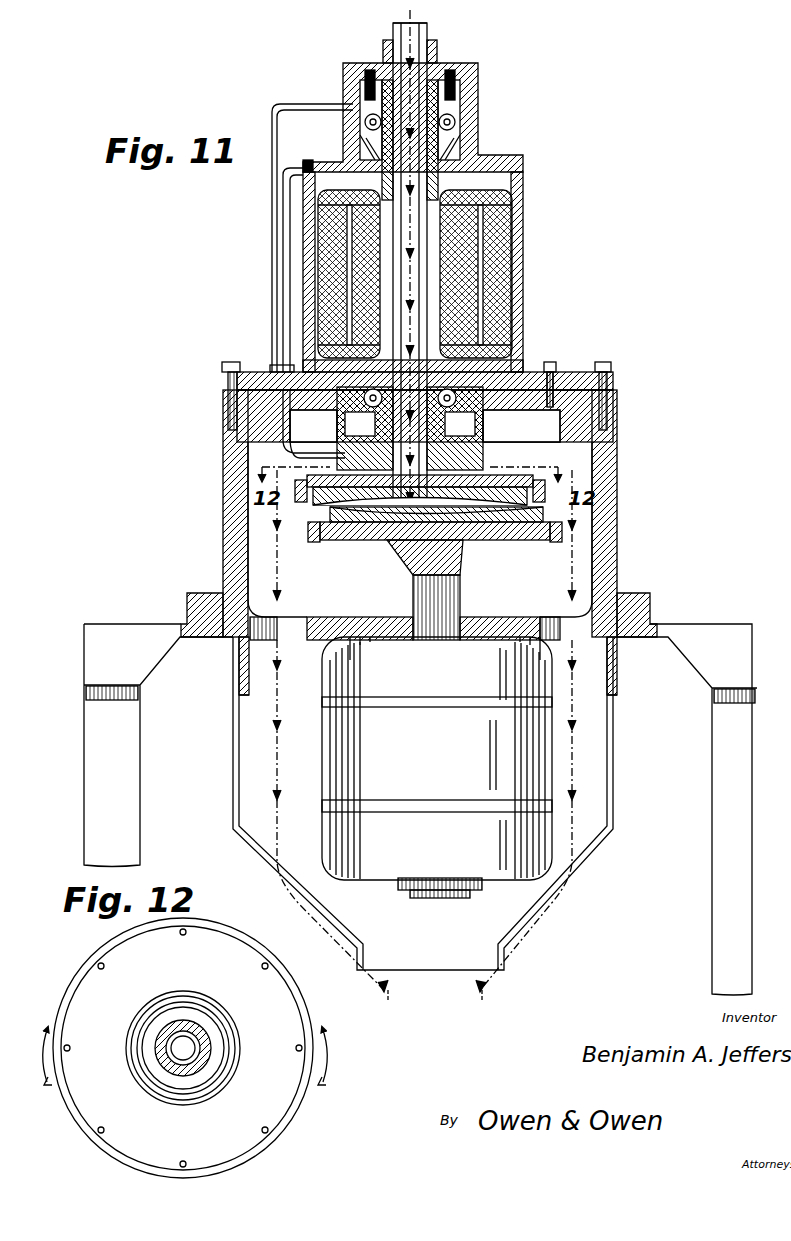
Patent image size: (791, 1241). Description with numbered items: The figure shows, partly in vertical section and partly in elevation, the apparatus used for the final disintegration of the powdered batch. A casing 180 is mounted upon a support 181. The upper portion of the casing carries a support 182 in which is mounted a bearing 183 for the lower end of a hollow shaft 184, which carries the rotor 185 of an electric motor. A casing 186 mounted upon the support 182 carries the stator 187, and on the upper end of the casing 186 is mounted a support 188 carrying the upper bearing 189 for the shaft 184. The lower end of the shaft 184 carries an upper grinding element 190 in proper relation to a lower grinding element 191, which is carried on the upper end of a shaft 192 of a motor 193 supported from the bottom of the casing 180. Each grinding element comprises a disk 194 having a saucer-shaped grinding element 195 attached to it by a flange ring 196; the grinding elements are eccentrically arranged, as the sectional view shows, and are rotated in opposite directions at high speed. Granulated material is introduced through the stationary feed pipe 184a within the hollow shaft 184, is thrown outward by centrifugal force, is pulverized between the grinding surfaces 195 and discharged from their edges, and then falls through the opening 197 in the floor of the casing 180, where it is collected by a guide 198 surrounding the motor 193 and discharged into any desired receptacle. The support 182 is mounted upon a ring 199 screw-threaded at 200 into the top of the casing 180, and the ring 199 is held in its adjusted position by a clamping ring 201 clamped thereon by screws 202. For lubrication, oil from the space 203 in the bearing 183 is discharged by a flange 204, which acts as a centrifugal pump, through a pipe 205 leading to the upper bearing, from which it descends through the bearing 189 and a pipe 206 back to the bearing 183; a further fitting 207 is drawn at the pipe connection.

In FIG. 11, the casing 180 is at (617, 478).
In FIG. 11, the support 181 is at (688, 616).
In FIG. 11, the support 182 is at (570, 366).
In FIG. 11, the bearing 183 is at (523, 357).
In FIG. 11, the hollow shaft 184 is at (436, 292).
In FIG. 12, the hollow shaft 184 is at (201, 1060).
In FIG. 11, the stationary feed pipe 184a is at (428, 35).
In FIG. 11, the rotor 185 is at (488, 237).
In FIG. 11, the casing 186 is at (517, 312).
In FIG. 11, the stator 187 is at (500, 287).
In FIG. 11, the support 188 is at (508, 160).
In FIG. 11, the upper bearing 189 is at (458, 124).
In FIG. 11, the upper grinding element 190 is at (508, 478).
In FIG. 11, the lower grinding element 191 is at (370, 540).
In FIG. 11, the shaft 192 is at (452, 598).
In FIG. 11, the motor 193 is at (370, 882).
In FIG. 11, the disk 194 is at (332, 548).
In FIG. 11, the saucer-shaped grinding element 195 is at (390, 540).
In FIG. 12, the saucer-shaped grinding element 195 is at (163, 940).
In FIG. 11, the flange ring 196 is at (302, 532).
In FIG. 12, the flange ring 196 is at (86, 965).
In FIG. 11, the opening 197 is at (565, 620).
In FIG. 11, the guide 198 is at (615, 792).
In FIG. 11, the ring 199 is at (230, 400).
In FIG. 11, the screw-threaded connection 200 is at (604, 428).
In FIG. 11, the clamping ring 201 is at (612, 378).
In FIG. 11, the screws 202 is at (613, 394).
In FIG. 11, the space 203 is at (345, 432).
In FIG. 11, the flange 204 is at (488, 432).
In FIG. 11, the pipe 205 is at (296, 455).
In FIG. 11, the pipe 206 is at (290, 165).
In FIG. 11, the pipe fitting 207 is at (278, 368).